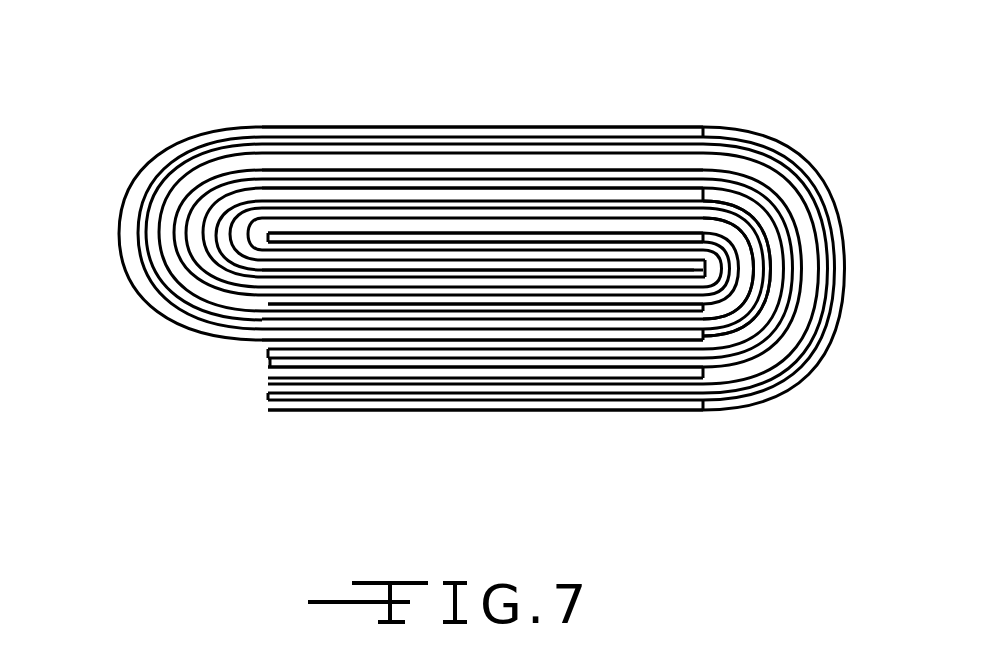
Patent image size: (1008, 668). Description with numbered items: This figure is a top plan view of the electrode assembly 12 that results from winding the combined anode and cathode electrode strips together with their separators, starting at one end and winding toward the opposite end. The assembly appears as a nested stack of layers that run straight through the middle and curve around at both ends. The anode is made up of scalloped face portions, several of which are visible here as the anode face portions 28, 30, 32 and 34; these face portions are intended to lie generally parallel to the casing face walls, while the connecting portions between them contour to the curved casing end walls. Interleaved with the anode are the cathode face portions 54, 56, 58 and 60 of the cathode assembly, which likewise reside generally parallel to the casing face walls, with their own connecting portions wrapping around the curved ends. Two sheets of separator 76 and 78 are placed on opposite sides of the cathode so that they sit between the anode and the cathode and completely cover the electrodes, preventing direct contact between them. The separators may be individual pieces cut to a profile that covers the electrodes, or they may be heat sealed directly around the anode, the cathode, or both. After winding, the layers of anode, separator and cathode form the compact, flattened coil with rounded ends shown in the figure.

The electrode assembly 12 is at (670, 95).
The anode face portion 28 is at (305, 408).
The anode face portion 30 is at (357, 128).
The anode face portion 32 is at (265, 341).
The anode face portion 34 is at (290, 195).
The cathode face portion 54 is at (265, 370).
The cathode face portion 56 is at (447, 164).
The cathode face portion 58 is at (282, 303).
The cathode face portion 60 is at (285, 232).
The separator 76 is at (785, 278).
The separator 78 is at (818, 232).